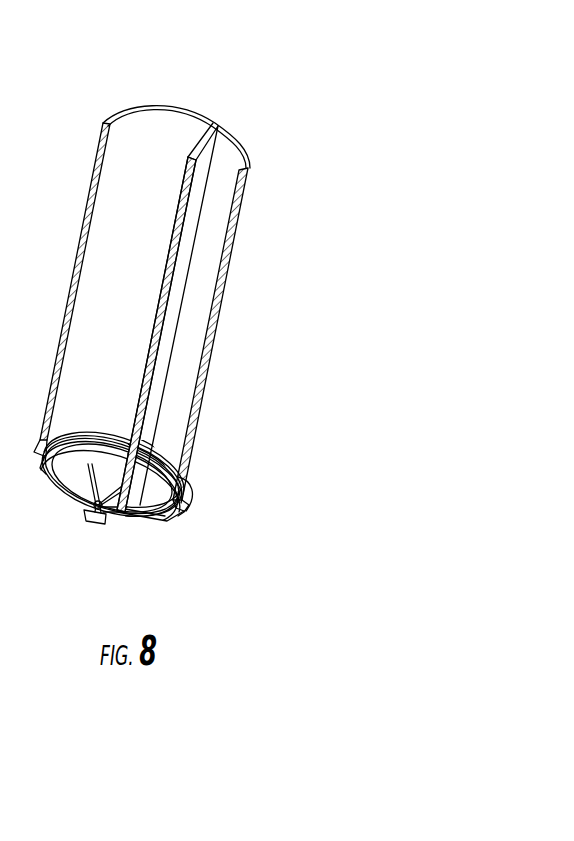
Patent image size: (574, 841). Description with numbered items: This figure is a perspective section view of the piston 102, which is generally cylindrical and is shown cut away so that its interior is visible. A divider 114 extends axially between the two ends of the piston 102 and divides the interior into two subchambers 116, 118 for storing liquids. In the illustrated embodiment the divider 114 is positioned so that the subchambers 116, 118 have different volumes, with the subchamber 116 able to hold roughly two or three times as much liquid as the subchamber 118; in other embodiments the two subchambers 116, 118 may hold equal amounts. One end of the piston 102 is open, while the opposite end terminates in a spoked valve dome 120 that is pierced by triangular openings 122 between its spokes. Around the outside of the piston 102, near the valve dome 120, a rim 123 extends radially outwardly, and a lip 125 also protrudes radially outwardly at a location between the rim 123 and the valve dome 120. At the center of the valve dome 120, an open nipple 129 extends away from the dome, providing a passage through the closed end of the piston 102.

The piston 102 is at (161, 313).
The divider 114 is at (160, 348).
The subchamber 116 is at (166, 137).
The subchamber 118 is at (232, 172).
The spoked valve dome 120 is at (140, 517).
The triangular openings 122 is at (100, 485).
The rim 123 is at (186, 493).
The lip 125 is at (183, 516).
The open nipple 129 is at (106, 522).